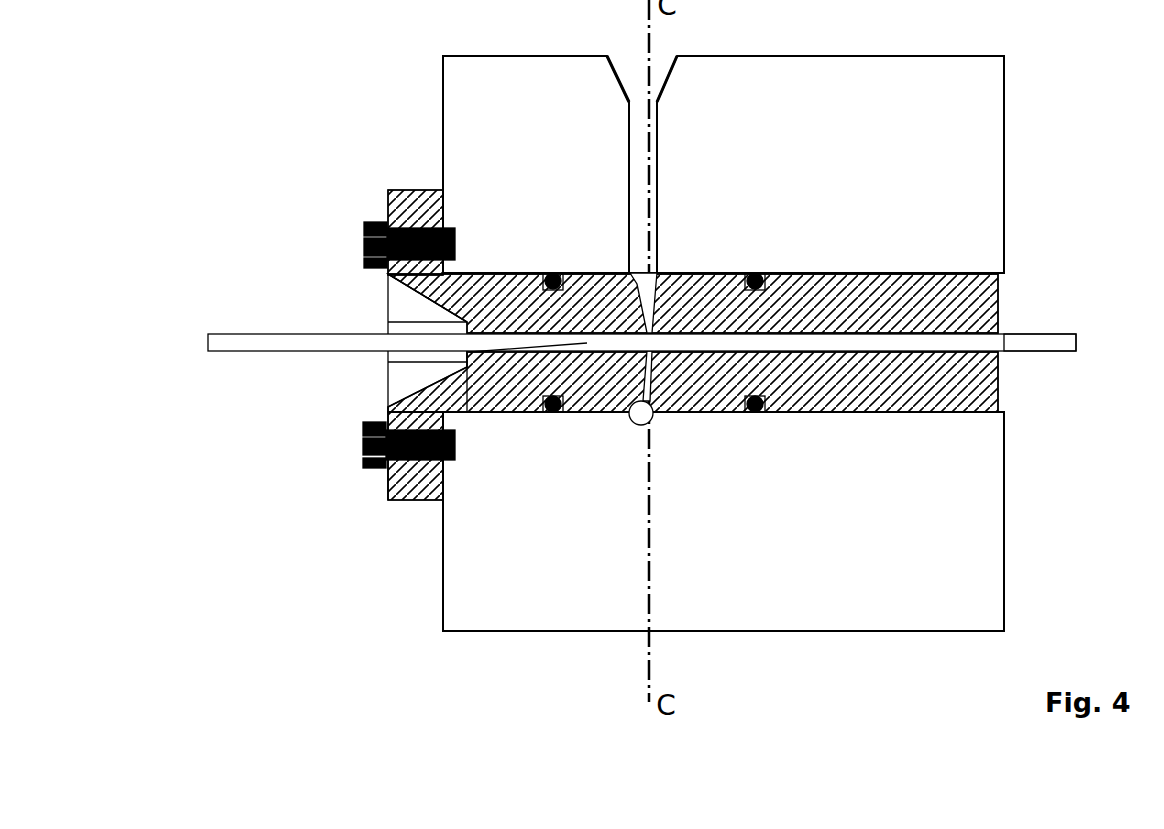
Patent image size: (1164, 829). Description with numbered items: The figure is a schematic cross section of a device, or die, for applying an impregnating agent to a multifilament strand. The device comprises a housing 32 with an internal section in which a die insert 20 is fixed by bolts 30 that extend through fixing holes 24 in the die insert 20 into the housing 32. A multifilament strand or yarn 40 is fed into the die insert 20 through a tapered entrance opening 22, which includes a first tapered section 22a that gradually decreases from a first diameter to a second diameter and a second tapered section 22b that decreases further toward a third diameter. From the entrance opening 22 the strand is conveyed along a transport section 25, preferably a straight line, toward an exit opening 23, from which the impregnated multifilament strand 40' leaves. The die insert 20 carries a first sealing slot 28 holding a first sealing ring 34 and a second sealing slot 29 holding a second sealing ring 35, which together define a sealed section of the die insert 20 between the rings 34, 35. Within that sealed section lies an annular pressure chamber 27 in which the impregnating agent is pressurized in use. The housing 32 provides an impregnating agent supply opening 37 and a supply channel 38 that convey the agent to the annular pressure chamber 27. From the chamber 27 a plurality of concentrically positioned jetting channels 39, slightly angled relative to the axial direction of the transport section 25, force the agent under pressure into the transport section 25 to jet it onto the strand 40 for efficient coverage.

The die insert 20 is at (1005, 381).
The entrance opening 22 is at (366, 308).
The first tapered section 22a is at (398, 298).
The second tapered section 22b is at (477, 328).
The exit opening 23 is at (1014, 319).
The fixing holes 24 is at (400, 463).
The transport section 25 is at (470, 352).
The annular pressure chamber 27 is at (642, 273).
The first sealing slot 28 is at (558, 273).
The second sealing slot 29 is at (752, 273).
The bolts 30 is at (362, 445).
The housing 32 is at (969, 109).
The first sealing ring 34 is at (549, 273).
The second sealing ring 35 is at (755, 273).
The impregnating agent supply opening 37 is at (662, 60).
The supply channel 38 is at (637, 118).
The jetting channels 39 is at (643, 378).
The multifilament strand 40 is at (639, 402).
The impregnated multifilament strand 40' is at (1065, 407).